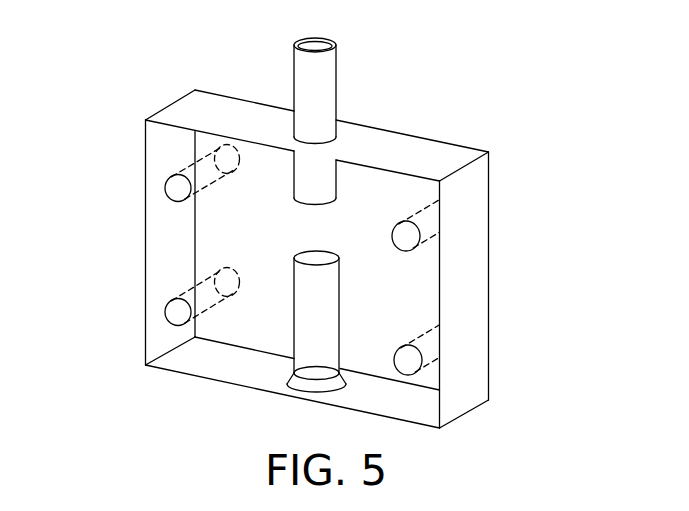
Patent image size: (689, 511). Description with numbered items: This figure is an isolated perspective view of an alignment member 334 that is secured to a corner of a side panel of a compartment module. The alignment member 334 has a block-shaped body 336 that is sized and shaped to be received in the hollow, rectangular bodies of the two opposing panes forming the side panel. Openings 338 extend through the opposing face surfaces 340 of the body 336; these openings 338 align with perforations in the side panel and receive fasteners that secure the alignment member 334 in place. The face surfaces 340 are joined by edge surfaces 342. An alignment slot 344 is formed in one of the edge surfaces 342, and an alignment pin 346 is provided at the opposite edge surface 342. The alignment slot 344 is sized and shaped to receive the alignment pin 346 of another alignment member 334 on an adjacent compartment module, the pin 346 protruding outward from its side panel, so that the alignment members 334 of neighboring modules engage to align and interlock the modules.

The alignment member 334 is at (533, 182).
The block-shaped body 336 is at (452, 297).
The openings 338 is at (160, 194).
The face surfaces 340 is at (204, 253).
The edge surfaces 342 is at (155, 158).
The alignment slot 344 is at (312, 382).
The alignment pin 346 is at (323, 70).